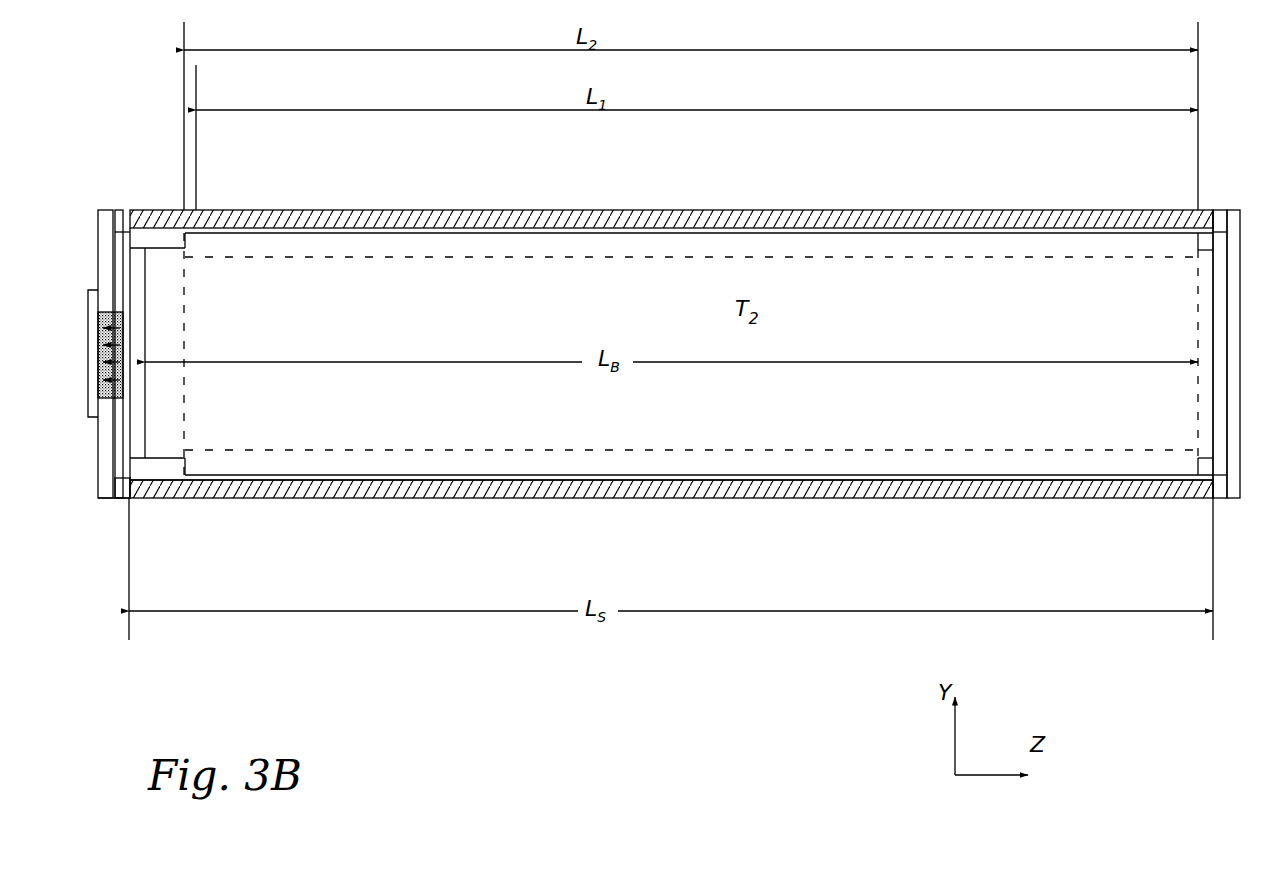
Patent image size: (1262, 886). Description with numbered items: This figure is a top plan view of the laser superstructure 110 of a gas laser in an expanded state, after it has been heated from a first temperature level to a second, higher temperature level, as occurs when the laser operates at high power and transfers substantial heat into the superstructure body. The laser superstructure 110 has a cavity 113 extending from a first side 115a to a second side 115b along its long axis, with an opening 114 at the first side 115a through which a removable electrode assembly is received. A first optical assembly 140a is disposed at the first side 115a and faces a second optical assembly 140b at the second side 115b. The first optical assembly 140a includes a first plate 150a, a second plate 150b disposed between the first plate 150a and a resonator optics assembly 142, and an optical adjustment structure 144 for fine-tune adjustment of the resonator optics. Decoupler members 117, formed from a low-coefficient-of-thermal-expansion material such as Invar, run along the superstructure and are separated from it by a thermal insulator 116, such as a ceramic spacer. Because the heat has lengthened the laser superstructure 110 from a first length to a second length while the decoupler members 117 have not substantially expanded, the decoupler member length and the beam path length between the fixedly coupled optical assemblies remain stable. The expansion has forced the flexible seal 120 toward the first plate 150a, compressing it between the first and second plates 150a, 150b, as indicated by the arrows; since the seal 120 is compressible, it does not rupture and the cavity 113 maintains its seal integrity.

The laser superstructure 110 is at (942, 229).
The cavity 113 is at (572, 450).
The opening 114 is at (183, 305).
The first side 115a is at (163, 512).
The second side 115b is at (1190, 195).
The thermal insulator 116 is at (840, 480).
The decoupler members 117 is at (500, 212).
The flexible seal 120 is at (130, 377).
The first optical assembly 140a is at (108, 200).
The second optical assembly 140b is at (1230, 265).
The resonator optics assembly 142 is at (138, 284).
The optical adjustment structure 144 is at (92, 403).
The first plate 150a is at (108, 487).
The second plate 150b is at (120, 208).